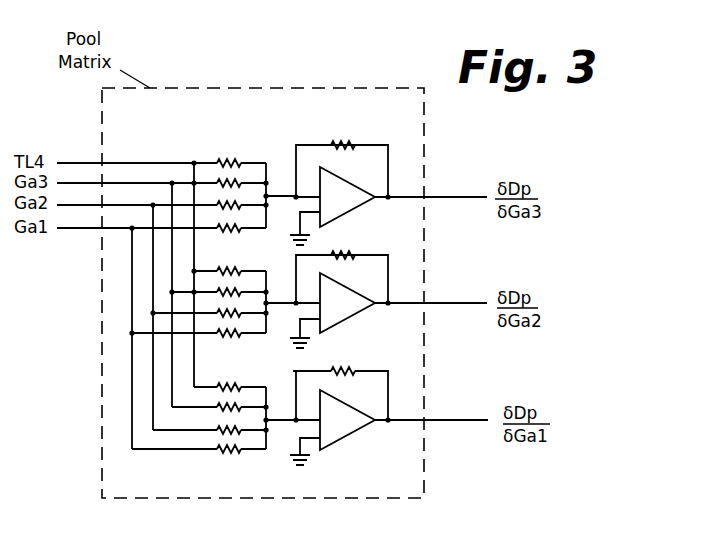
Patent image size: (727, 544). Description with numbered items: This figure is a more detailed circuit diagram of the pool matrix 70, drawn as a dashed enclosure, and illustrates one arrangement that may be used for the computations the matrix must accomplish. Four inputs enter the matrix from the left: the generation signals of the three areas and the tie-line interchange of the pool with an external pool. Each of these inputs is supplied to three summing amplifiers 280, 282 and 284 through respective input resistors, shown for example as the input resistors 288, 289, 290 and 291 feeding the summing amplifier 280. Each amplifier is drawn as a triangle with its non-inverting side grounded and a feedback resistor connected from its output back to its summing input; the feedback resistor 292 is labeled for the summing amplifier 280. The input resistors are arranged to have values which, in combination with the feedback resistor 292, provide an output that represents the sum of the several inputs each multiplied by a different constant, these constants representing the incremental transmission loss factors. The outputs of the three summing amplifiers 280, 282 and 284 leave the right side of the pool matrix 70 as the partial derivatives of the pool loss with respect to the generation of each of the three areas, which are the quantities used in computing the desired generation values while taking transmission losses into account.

The pool matrix 70 is at (318, 88).
The summing amplifier 280 is at (328, 430).
The summing amplifier 282 is at (345, 322).
The summing amplifier 284 is at (345, 215).
The input resistor 288 is at (232, 452).
The input resistor 289 is at (228, 430).
The input resistor 290 is at (237, 405).
The input resistor 291 is at (228, 385).
The feedback resistor 292 is at (353, 371).